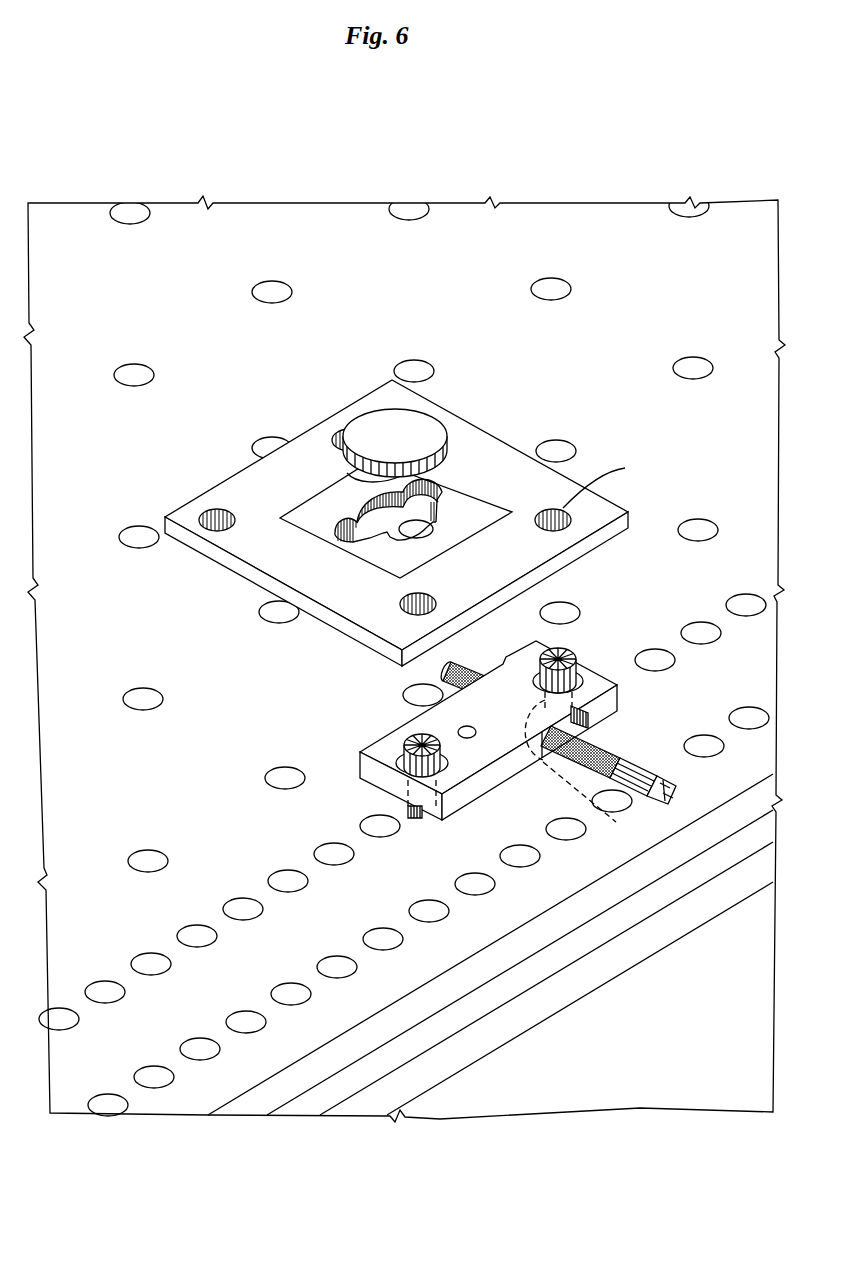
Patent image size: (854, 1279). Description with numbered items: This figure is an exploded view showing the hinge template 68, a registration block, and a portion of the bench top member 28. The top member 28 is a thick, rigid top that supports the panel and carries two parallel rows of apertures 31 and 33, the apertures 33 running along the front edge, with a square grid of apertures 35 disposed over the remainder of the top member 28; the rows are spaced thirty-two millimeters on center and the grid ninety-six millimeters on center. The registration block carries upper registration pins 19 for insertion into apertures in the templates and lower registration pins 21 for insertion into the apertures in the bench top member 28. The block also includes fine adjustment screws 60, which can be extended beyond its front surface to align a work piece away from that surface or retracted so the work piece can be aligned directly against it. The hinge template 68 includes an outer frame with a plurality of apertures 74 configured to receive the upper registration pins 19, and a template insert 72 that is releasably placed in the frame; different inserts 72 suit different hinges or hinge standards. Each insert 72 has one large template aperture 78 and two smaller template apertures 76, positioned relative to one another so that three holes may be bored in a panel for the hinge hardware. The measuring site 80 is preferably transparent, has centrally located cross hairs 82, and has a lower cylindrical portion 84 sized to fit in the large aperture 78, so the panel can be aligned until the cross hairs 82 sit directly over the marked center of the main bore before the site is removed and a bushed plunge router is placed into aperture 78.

The upper registration pins 19 is at (582, 668).
The lower registration pins 21 is at (608, 822).
The top member 28 is at (487, 928).
The apertures 31 is at (282, 880).
The apertures 33 is at (584, 826).
The apertures 35 is at (150, 856).
The fine adjustment screws 60 is at (605, 735).
The hinge template 68 is at (518, 444).
The template insert 72 is at (365, 562).
The apertures 74 is at (335, 432).
The smaller template apertures 76 is at (440, 490).
The large template aperture 78 is at (388, 540).
The measuring site 80 is at (368, 382).
The cross hairs 82 is at (428, 420).
The lower cylindrical portion 84 is at (357, 482).